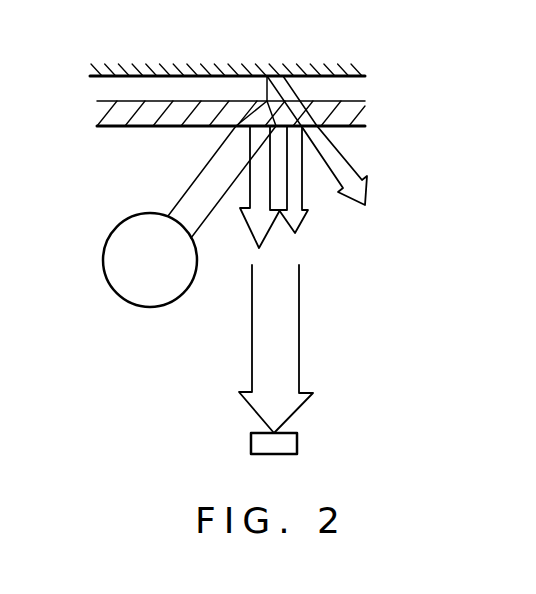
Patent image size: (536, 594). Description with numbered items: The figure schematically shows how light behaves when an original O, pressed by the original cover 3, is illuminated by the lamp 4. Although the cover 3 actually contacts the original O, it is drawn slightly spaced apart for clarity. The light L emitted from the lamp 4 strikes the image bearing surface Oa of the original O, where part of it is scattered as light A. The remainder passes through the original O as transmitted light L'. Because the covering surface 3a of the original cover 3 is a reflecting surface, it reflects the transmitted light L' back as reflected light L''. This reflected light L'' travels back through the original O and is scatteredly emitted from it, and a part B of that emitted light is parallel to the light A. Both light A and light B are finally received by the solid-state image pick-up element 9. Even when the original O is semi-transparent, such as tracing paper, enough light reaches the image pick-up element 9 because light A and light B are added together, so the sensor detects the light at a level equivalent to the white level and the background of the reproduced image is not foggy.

The original cover 3 is at (342, 73).
The covering surface 3a is at (343, 78).
The original O is at (345, 117).
The image bearing surface Oa is at (344, 129).
The lamp 4 is at (112, 230).
The light L is at (209, 182).
The transmitted light L' is at (252, 67).
The reflected light L'' is at (317, 107).
The light A is at (250, 233).
The light B is at (302, 227).
The solid-state image pick-up element 9 is at (298, 440).